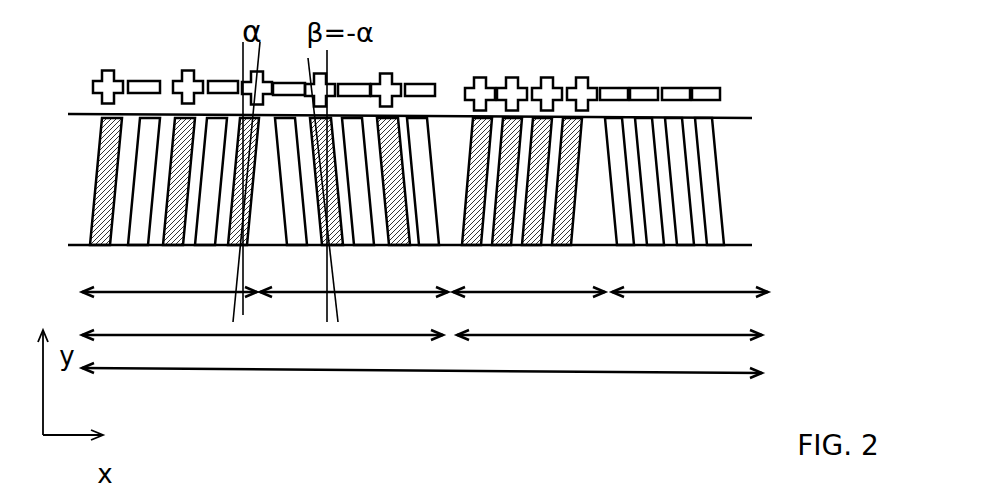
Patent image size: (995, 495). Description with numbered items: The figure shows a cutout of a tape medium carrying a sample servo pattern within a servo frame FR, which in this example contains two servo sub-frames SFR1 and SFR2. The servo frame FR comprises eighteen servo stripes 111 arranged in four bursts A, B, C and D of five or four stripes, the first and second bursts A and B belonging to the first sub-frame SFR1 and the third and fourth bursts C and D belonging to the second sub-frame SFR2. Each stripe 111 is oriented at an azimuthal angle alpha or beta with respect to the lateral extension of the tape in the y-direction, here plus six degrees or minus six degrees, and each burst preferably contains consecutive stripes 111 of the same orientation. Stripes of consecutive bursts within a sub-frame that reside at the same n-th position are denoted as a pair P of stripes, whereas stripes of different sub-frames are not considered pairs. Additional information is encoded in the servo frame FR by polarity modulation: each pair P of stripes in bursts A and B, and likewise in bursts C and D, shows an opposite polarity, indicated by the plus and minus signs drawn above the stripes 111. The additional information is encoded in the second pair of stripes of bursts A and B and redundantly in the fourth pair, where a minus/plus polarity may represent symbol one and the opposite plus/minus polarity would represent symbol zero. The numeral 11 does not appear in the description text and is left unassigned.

The light source line 11 is at (442, 117).
The servo stripe 111 is at (710, 153).
The pair of stripes P is at (707, 118).
The first burst A is at (169, 281).
The second burst B is at (354, 281).
The third burst C is at (529, 281).
The fourth burst D is at (690, 281).
The first servo sub-frame SFR1 is at (262, 320).
The second servo sub-frame SFR2 is at (609, 321).
The servo frame FR is at (422, 358).